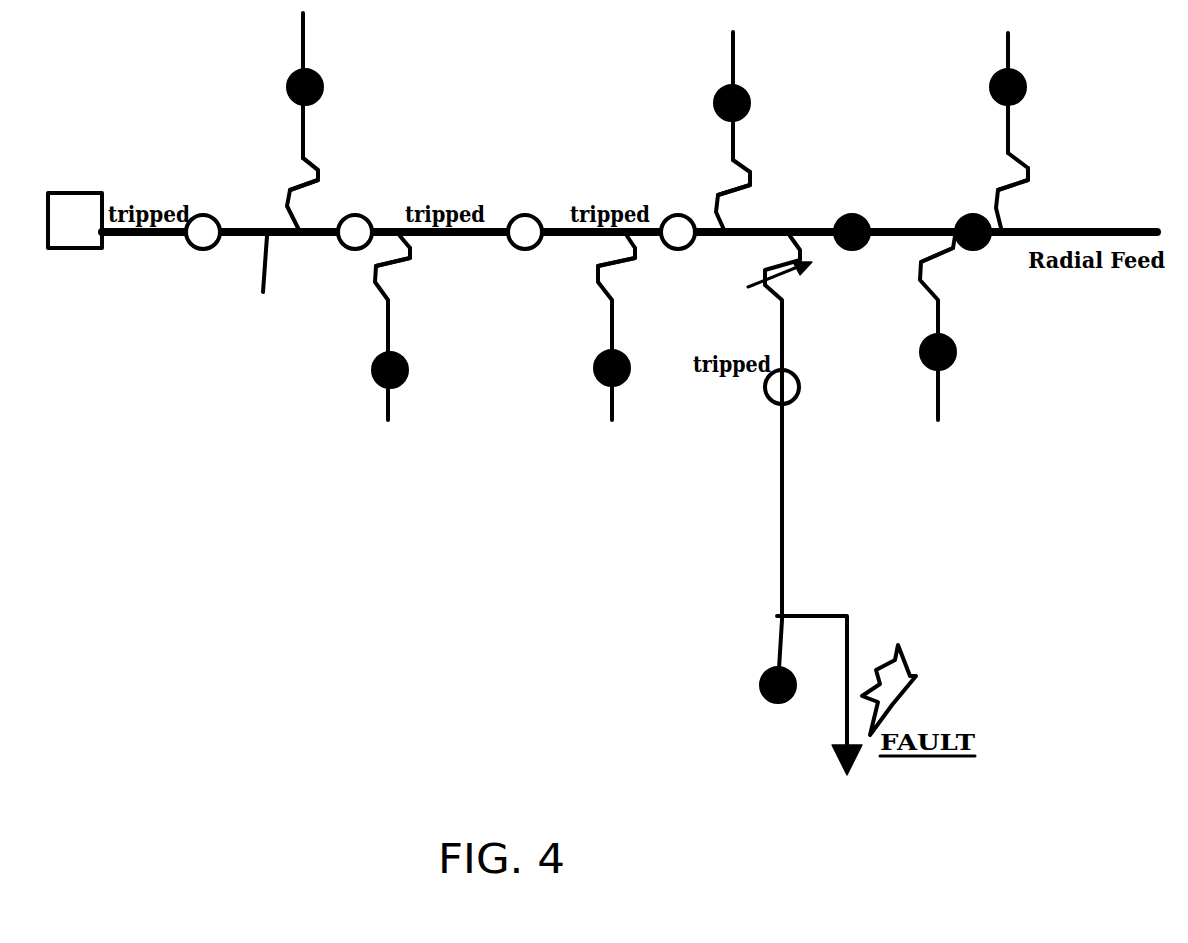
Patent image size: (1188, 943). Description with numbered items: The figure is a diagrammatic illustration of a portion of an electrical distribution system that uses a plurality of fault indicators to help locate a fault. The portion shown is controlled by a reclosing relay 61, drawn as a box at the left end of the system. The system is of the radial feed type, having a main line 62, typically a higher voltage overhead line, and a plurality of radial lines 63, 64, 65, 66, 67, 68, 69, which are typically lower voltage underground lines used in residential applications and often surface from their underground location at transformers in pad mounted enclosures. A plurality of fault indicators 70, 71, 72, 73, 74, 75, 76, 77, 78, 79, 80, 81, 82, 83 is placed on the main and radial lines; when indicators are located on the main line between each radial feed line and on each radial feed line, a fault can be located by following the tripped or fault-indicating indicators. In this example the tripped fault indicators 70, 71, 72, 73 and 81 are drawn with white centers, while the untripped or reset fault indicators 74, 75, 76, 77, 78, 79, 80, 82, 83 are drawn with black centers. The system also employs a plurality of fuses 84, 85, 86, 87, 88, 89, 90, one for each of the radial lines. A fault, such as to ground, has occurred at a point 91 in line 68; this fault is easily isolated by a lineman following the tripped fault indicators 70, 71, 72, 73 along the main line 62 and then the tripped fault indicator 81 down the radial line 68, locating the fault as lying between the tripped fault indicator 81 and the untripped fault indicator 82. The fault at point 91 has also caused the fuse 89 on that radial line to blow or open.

The reclosing relay 61 is at (76, 250).
The main line 62 is at (251, 292).
The radial line 63 is at (305, 128).
The radial line 64 is at (735, 130).
The radial line 65 is at (1011, 115).
The radial line 66 is at (390, 335).
The radial line 67 is at (615, 328).
The radial line 68 is at (787, 325).
The radial line 69 is at (940, 320).
The fault indicator 70 is at (213, 216).
The fault indicator 71 is at (367, 217).
The fault indicator 72 is at (530, 215).
The fault indicator 73 is at (680, 215).
The fault indicator 74 is at (860, 216).
The fault indicator 75 is at (969, 215).
The fault indicator 76 is at (320, 77).
The fault indicator 77 is at (746, 92).
The fault indicator 78 is at (1023, 78).
The fault indicator 79 is at (377, 381).
The fault indicator 80 is at (598, 379).
The fault indicator 81 is at (767, 396).
The fault indicator 82 is at (764, 694).
The fault indicator 83 is at (925, 362).
The fuse 84 is at (290, 190).
The fuse 85 is at (740, 198).
The fuse 86 is at (998, 195).
The fuse 87 is at (385, 268).
The fuse 88 is at (608, 268).
The fuse 89 is at (795, 282).
The fuse 90 is at (928, 266).
The fault point 91 is at (775, 614).